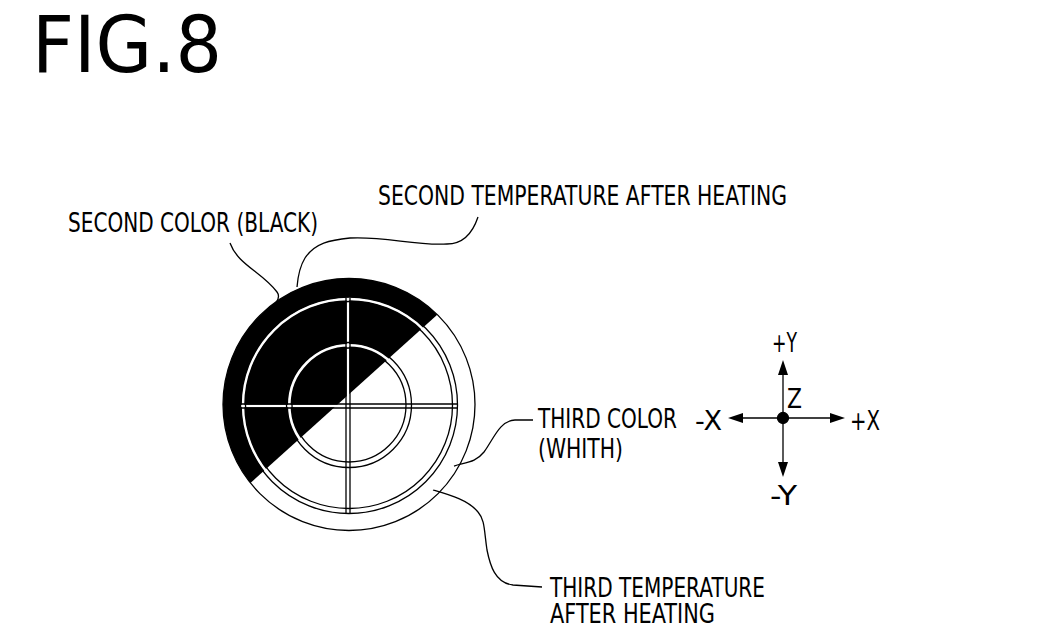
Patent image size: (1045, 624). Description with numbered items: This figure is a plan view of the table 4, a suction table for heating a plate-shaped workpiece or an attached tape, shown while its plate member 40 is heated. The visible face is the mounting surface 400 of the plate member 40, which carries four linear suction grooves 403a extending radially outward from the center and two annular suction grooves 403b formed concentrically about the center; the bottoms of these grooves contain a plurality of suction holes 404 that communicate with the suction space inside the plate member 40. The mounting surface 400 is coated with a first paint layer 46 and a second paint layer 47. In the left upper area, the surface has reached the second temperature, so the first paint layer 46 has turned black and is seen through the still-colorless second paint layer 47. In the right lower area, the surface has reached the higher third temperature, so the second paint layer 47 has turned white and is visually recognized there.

The table 4 is at (470, 290).
The plate member 40 is at (334, 362).
The mounting surface 400 is at (465, 357).
The linear suction grooves 403a is at (351, 483).
The annular suction grooves 403b is at (288, 506).
The suction holes 404 is at (262, 486).
The first paint layer 46 is at (274, 292).
The second paint layer 47 is at (452, 478).